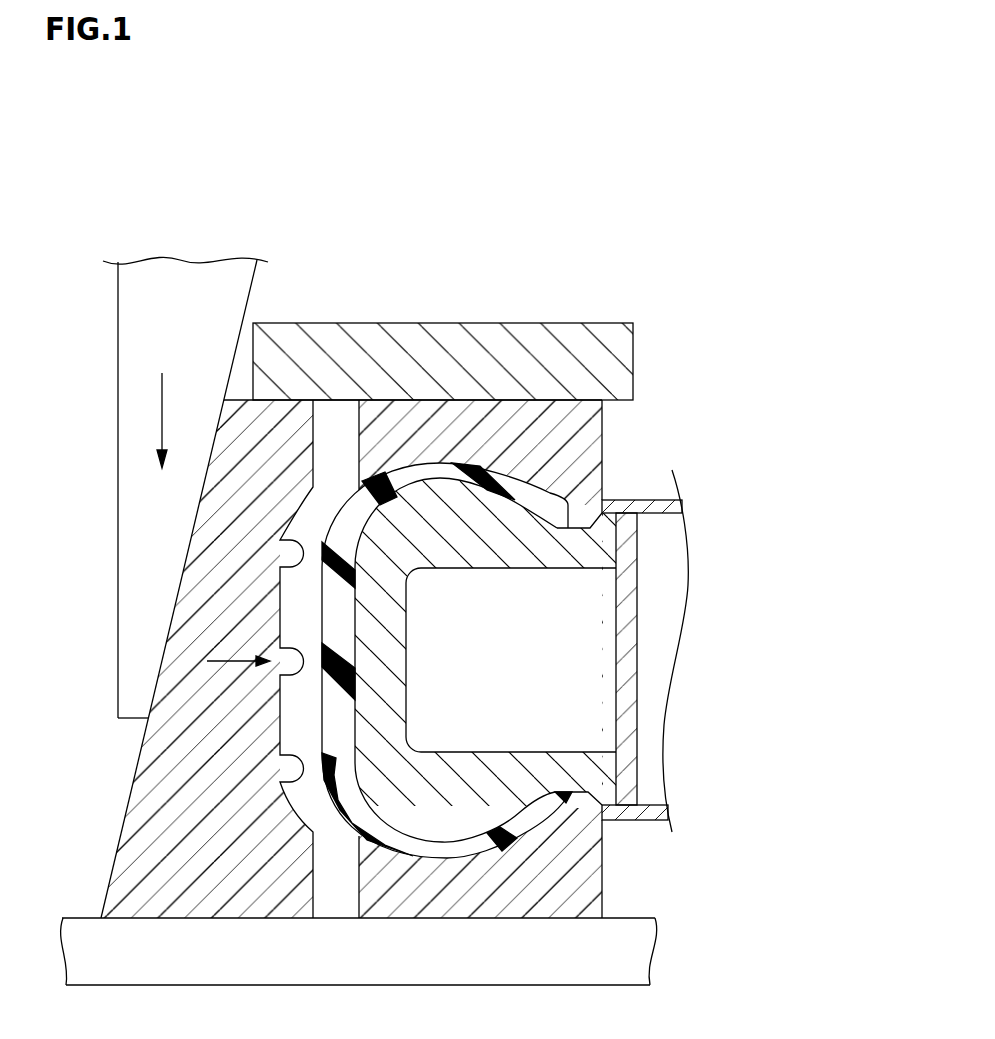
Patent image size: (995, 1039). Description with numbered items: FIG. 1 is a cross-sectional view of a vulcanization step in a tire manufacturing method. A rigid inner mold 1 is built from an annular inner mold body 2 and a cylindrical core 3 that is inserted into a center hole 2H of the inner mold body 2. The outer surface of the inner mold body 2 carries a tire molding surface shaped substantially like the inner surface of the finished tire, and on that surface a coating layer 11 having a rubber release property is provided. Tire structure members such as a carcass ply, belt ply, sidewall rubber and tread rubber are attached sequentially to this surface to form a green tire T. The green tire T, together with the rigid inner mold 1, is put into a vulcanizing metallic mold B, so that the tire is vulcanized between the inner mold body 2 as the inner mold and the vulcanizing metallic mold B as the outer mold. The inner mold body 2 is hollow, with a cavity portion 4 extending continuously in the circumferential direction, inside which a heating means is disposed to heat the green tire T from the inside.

The rigid inner mold 1 is at (712, 596).
The inner mold body 2 is at (403, 659).
The center hole 2H is at (617, 544).
The cylindrical core 3 is at (637, 722).
The cavity portion 4 is at (522, 677).
The vulcanizing metallic mold B is at (510, 427).
The green tire T is at (340, 735).
The coating layer 11 is at (355, 604).